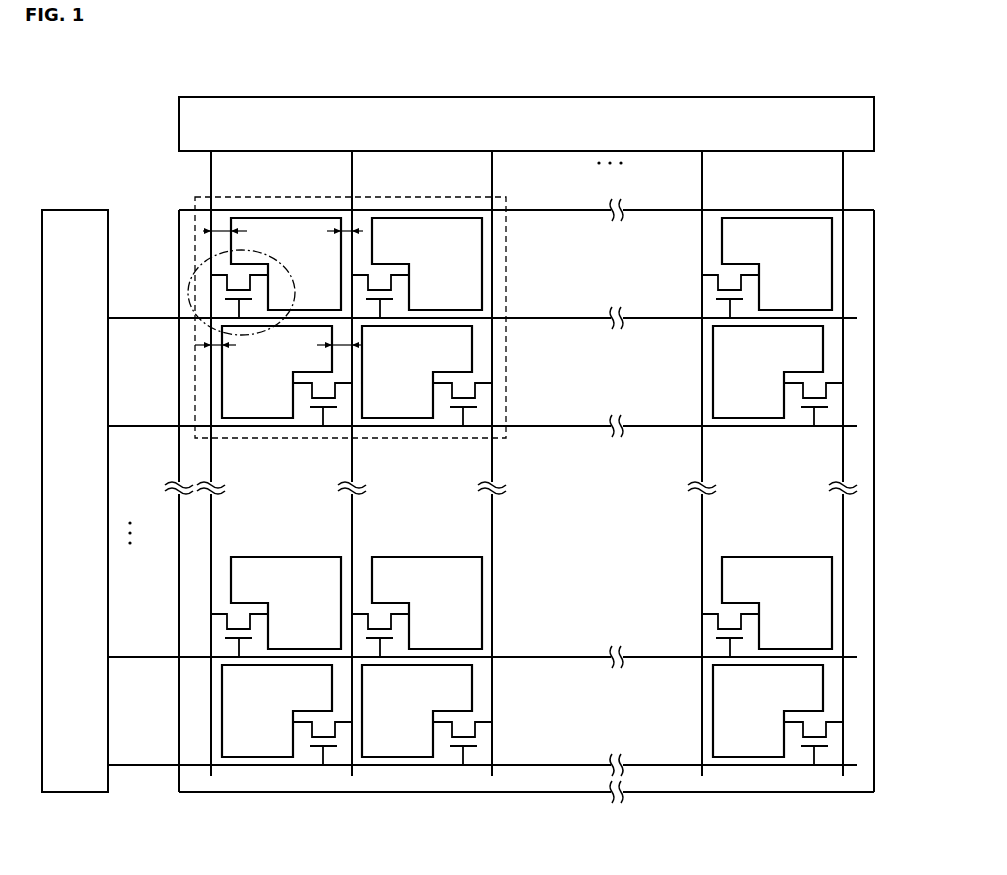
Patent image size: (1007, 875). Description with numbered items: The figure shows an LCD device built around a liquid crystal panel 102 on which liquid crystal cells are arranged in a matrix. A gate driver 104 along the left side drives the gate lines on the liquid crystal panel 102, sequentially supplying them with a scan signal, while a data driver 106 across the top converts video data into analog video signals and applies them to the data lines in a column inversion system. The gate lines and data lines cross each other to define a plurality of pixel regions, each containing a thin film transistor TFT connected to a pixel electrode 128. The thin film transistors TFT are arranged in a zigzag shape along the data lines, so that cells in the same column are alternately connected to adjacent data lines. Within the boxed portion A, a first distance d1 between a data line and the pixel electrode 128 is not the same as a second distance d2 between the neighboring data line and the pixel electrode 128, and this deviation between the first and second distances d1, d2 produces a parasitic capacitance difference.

The liquid crystal panel 102 is at (497, 499).
The gate driver 104 is at (75, 210).
The data driver 106 is at (390, 97).
The pixel electrode 128 is at (286, 217).
The thin film transistor TFT is at (203, 263).
The portion A is at (275, 440).
The first distance d1 is at (219, 230).
The second distance d2 is at (345, 230).